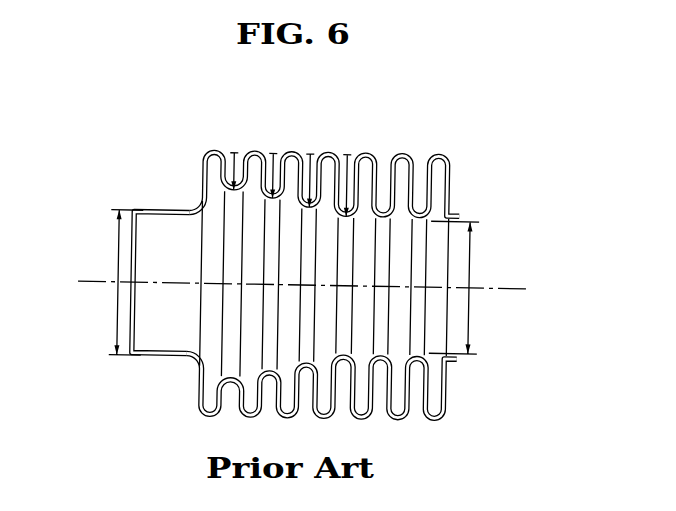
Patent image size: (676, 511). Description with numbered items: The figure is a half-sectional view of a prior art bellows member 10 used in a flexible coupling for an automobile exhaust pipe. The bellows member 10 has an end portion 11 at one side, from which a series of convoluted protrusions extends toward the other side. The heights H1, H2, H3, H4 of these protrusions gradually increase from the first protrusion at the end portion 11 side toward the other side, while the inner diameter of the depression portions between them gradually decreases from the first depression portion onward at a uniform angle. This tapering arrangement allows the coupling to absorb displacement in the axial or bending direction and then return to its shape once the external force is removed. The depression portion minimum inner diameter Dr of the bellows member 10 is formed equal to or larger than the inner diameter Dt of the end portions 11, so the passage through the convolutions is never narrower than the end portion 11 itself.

The bellows member 10 is at (305, 250).
The end portion 11 is at (164, 211).
The height of first protrusion H1 is at (233, 153).
The height of second protrusion H2 is at (272, 153).
The height of third protrusion H3 is at (309, 153).
The height of fourth protrusion H4 is at (346, 153).
The inner diameter of end portions Dt is at (117, 252).
The depression portion minimum inner diameter Dr is at (470, 258).